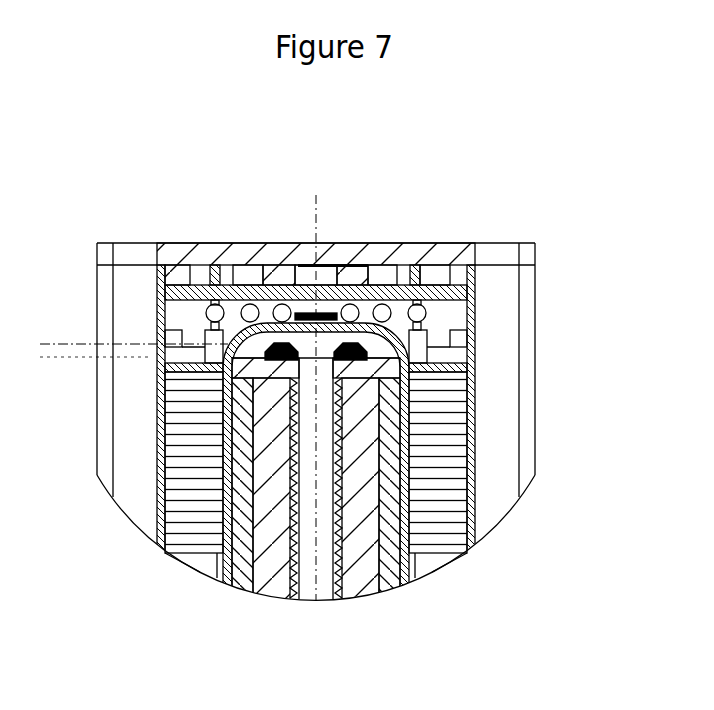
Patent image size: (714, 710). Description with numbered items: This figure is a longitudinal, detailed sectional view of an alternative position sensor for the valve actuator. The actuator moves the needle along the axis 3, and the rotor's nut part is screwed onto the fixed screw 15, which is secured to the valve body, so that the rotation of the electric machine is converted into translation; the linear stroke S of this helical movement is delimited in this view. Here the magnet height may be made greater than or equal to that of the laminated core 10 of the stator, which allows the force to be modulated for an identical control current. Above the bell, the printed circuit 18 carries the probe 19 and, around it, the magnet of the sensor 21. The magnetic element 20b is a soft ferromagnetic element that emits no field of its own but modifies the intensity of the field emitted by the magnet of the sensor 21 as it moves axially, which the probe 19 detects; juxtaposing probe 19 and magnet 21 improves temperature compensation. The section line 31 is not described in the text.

The axis 3 is at (306, 206).
The laminated core 10 is at (430, 445).
The screw 15 is at (337, 563).
The printed circuit 18 is at (210, 292).
The probe 19 is at (325, 312).
The magnetic element 20b is at (365, 352).
The magnet of the sensor 21 is at (345, 295).
The section line 31 is at (130, 346).